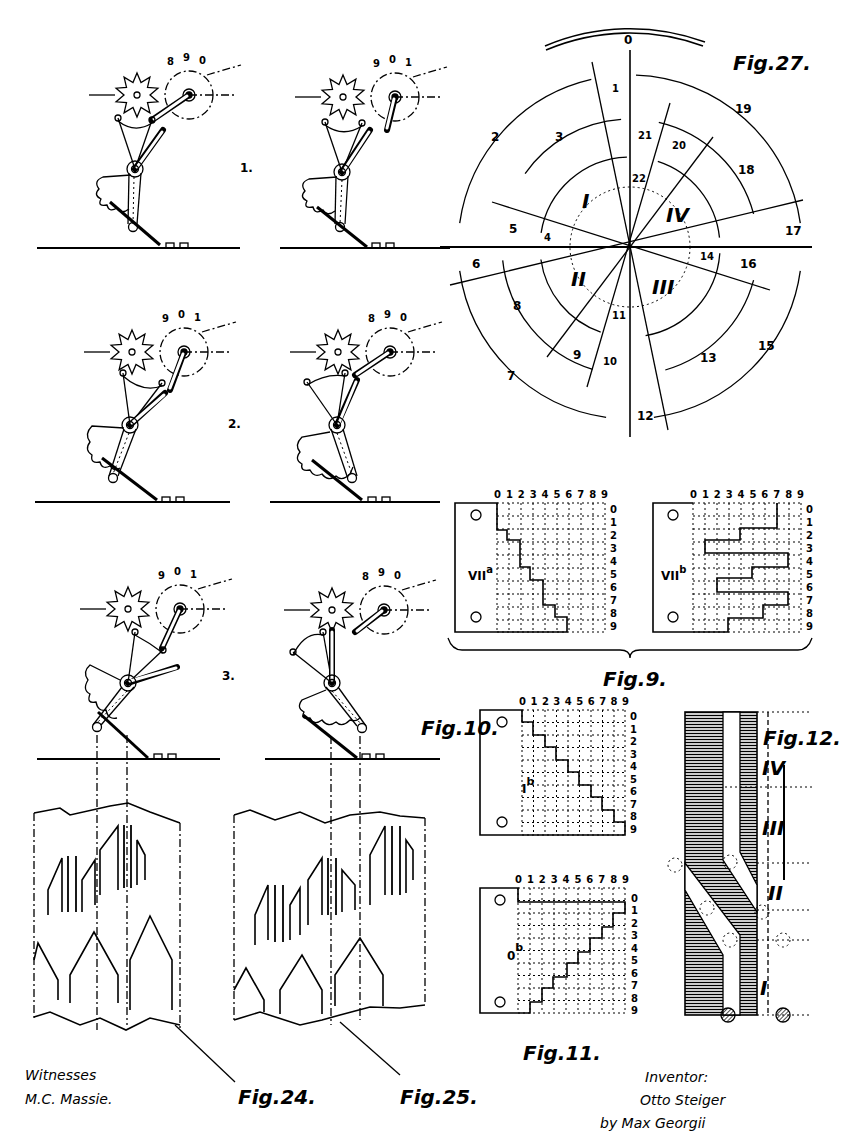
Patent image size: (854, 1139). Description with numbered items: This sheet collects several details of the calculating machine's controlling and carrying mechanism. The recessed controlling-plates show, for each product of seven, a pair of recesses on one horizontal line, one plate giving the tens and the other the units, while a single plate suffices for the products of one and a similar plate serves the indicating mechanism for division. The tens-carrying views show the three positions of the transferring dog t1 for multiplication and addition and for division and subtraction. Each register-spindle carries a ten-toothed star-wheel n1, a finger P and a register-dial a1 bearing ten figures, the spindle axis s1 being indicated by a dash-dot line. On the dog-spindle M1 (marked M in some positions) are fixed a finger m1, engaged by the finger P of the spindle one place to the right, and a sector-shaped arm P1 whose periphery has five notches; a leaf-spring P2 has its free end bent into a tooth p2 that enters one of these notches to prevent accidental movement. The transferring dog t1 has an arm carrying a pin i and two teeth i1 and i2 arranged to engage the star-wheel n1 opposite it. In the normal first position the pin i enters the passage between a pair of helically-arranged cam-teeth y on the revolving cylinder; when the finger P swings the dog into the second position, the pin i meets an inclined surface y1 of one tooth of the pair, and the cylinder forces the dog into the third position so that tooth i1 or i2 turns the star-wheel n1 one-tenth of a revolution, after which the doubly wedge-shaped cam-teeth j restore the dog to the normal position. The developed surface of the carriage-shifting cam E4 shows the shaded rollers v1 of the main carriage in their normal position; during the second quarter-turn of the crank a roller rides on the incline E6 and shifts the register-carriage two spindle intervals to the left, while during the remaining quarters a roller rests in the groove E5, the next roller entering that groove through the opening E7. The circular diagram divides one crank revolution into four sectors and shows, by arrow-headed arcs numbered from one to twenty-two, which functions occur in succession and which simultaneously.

In FIG. 24, the star-wheel n1 is at (141, 72).
In FIG. 25, the star-wheel n1 is at (347, 74).
In FIG. 24, the register-dial a1 is at (206, 342).
In FIG. 25, the register-dial a1 is at (411, 344).
In FIG. 24, the shaft axis s1 is at (160, 352).
In FIG. 25, the shaft axis s1 is at (365, 353).
In FIG. 24, the finger P is at (175, 118).
In FIG. 25, the finger P is at (392, 135).
In FIG. 24, the transferring dog t1 is at (123, 146).
In FIG. 25, the transferring dog t1 is at (333, 147).
In FIG. 24, the tooth i1 is at (190, 672).
In FIG. 25, the tooth i1 is at (300, 632).
In FIG. 24, the tooth i2 is at (114, 121).
In FIG. 25, the tooth i2 is at (320, 123).
In FIG. 24, the finger m1 is at (155, 143).
In FIG. 25, the finger m1 is at (361, 145).
In FIG. 24, the dog-spindle M1 is at (145, 171).
In FIG. 25, the dog-spindle M1 is at (351, 173).
In FIG. 25, the pivot M is at (346, 428).
In FIG. 24, the sector-shaped arm P1 is at (100, 182).
In FIG. 25, the sector-shaped arm P1 is at (306, 184).
In FIG. 24, the tooth p2 is at (103, 210).
In FIG. 25, the tooth p2 is at (309, 212).
In FIG. 24, the pin i is at (127, 228).
In FIG. 25, the pin i is at (345, 228).
In FIG. 24, the leaf-spring P2 is at (150, 234).
In FIG. 25, the leaf-spring P2 is at (360, 238).
In FIG. 24, the doubly wedge-shaped cam-teeth j is at (103, 963).
In FIG. 25, the doubly wedge-shaped cam-teeth j is at (308, 976).
In FIG. 24, the helically-arranged cam-teeth y is at (110, 863).
In FIG. 25, the helically-arranged cam-teeth y is at (405, 885).
In FIG. 24, the inclined surface y1 is at (78, 862).
In FIG. 25, the inclined surface y1 is at (292, 895).
In FIG. 12, the carriage-shifting cam E4 is at (700, 975).
In FIG. 12, the groove E5 is at (730, 722).
In FIG. 12, the incline E6 is at (692, 888).
In FIG. 12, the opening E7 is at (742, 884).
In FIG. 12, the roller v1 is at (755, 1023).